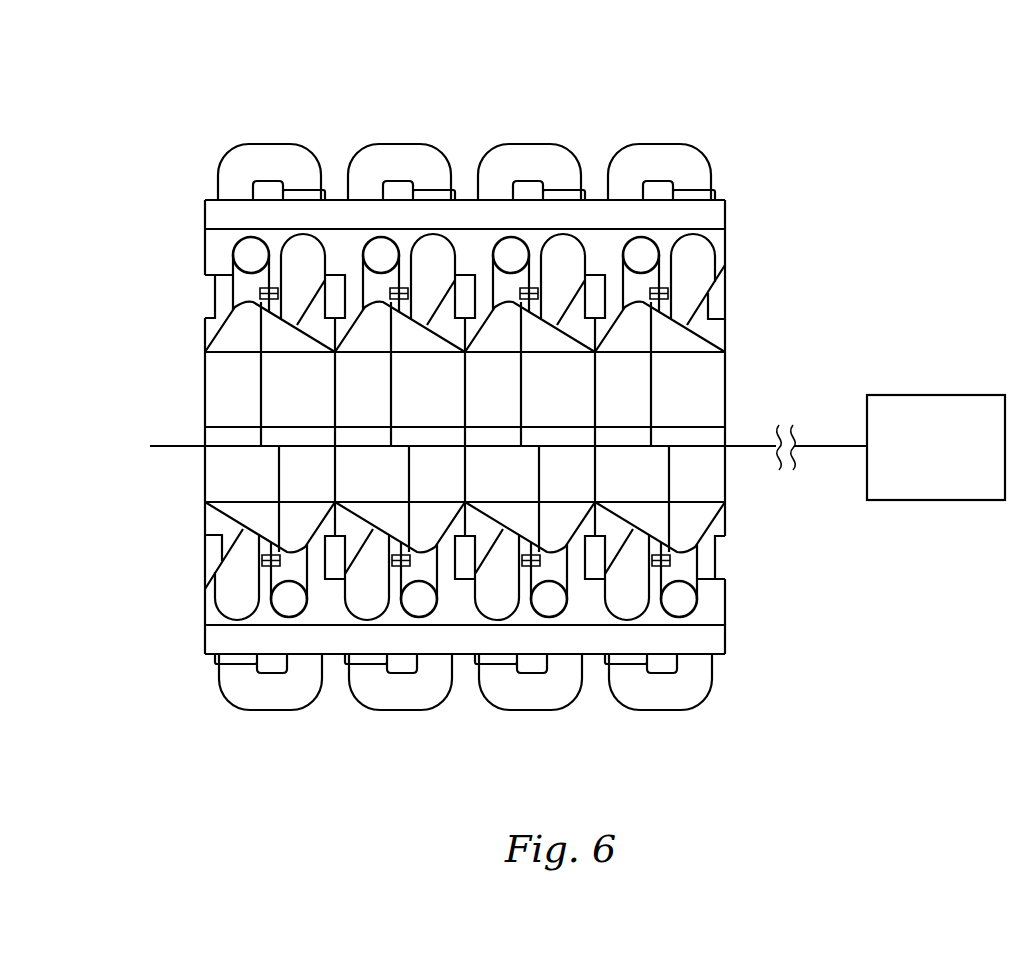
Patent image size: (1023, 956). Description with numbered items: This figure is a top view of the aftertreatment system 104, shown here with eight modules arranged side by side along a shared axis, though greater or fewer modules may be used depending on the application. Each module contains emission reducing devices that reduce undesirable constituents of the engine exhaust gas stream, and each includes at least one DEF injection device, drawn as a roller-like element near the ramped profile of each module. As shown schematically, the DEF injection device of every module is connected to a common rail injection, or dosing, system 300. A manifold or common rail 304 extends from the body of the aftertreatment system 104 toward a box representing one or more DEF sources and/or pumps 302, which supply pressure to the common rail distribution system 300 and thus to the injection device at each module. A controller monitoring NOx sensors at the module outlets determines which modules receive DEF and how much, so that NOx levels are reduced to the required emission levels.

The aftertreatment system 104 is at (184, 116).
The common rail injection system 300 is at (852, 370).
The DEF source and/or pump 302 is at (925, 490).
The common rail 304 is at (762, 446).